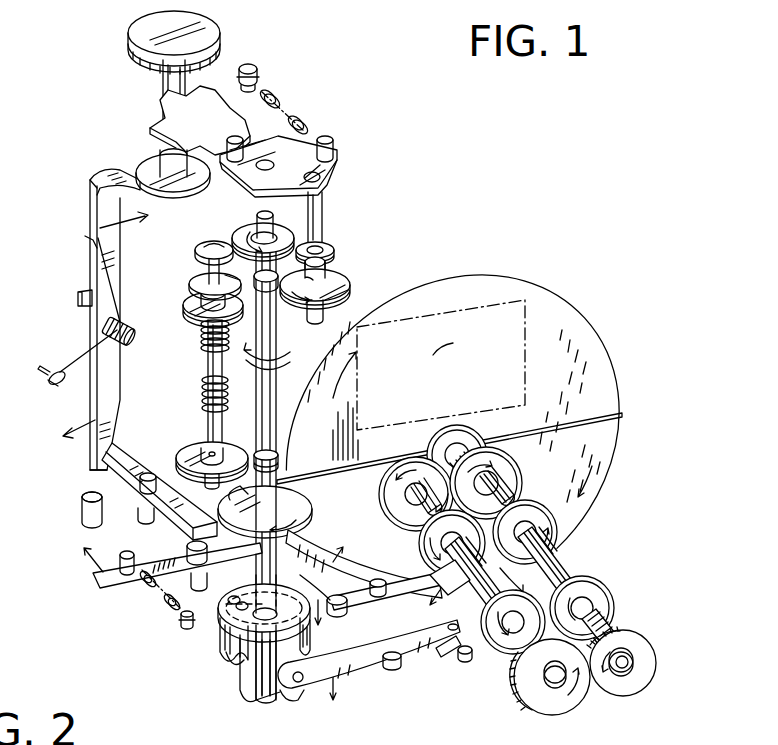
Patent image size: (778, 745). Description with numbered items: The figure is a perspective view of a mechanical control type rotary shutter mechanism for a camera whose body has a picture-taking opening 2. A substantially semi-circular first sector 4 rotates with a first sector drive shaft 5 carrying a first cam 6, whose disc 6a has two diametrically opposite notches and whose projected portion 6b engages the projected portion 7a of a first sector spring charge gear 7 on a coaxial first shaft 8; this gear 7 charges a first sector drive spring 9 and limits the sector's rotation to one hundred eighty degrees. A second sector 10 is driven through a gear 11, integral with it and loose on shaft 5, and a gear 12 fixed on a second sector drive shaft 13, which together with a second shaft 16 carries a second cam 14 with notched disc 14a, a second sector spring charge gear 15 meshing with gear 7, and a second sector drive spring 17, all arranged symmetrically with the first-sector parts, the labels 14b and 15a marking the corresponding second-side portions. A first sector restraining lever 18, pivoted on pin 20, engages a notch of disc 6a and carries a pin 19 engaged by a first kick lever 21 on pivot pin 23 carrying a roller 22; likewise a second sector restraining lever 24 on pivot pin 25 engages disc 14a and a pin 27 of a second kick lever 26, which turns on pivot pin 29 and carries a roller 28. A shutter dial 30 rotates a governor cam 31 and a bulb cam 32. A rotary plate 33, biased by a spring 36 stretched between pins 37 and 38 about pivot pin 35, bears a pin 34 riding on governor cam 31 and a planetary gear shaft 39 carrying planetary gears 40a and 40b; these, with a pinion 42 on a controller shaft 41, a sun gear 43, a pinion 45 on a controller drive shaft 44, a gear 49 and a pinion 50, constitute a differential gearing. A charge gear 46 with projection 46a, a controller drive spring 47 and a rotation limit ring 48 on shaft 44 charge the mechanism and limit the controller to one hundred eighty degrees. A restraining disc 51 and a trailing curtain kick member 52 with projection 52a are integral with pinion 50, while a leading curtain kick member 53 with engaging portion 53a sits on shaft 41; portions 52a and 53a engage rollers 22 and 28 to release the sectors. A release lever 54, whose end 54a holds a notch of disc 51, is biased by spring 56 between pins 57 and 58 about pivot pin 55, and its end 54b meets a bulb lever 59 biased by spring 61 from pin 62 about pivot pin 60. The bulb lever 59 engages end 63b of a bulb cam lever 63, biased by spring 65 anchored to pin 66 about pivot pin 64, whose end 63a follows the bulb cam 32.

The picture-taking opening 2 is at (515, 300).
The first sector 4 is at (600, 346).
The first sector drive shaft 5 is at (504, 492).
The first cam 6 is at (552, 564).
The disc 6a is at (558, 530).
The projected portion 6b is at (582, 588).
The first sector spring charge gear 7 is at (645, 680).
The projected portion 7a is at (600, 656).
The first shaft 8 is at (630, 662).
The first sector drive spring 9 is at (612, 608).
The second sector 10 is at (614, 446).
The gear 11 is at (500, 460).
The gear 12 is at (392, 468).
The second sector drive shaft 13 is at (384, 504).
The second cam 14 is at (502, 610).
The disc 14a is at (420, 540).
The roller on shaft 14 14b is at (510, 654).
The second sector spring charge gear 15 is at (586, 695).
The knurled rim 15a is at (604, 626).
The second shaft 16 is at (558, 684).
The second sector drive spring 17 is at (526, 662).
The first sector restraining lever 18 is at (465, 660).
The pin 19 is at (450, 636).
The pivot pin 20 is at (456, 644).
The first kick lever 21 is at (345, 680).
The roller 22 is at (270, 702).
The pivot pin 23 is at (392, 670).
The second sector restraining lever 24 is at (418, 588).
The pivot pin 25 is at (379, 594).
The second kick lever 26 is at (318, 598).
The pin 27 is at (340, 608).
The roller 28 is at (236, 655).
The pivot pin 29 is at (312, 662).
The shutter dial 30 is at (142, 40).
The governor cam 31 is at (186, 98).
The bulb cam 32 is at (165, 160).
The rotary plate 33 is at (336, 164).
The pin 34 is at (238, 134).
The pivot pin 35 is at (275, 166).
The spring 36 is at (277, 90).
The pin 37 is at (332, 136).
The pin 38 is at (255, 64).
The planetary gear shaft 39 is at (323, 212).
The planetary gear 40a is at (336, 248).
The planetary gear 40b is at (346, 276).
The controller shaft 41 is at (258, 224).
The pinion 42 is at (267, 312).
The sun gear 43 is at (242, 238).
The controller drive shaft 44 is at (207, 276).
The pinion 45 is at (200, 248).
The charge gear 46 is at (191, 318).
The upwardly projected portion 46a is at (198, 302).
The controller drive spring 47 is at (201, 345).
The rotation limit ring 48 is at (200, 291).
The controller driving gear 49 is at (202, 422).
The pinion 50 is at (283, 455).
The restraining disc 51 is at (305, 502).
The trailing curtain kick member 52 is at (220, 640).
The downwardly projected portion 52a is at (250, 698).
The leading curtain kick member 53 is at (243, 676).
The engaging portion 53a is at (294, 700).
The release lever 54 is at (98, 580).
The one end of release lever 54a is at (296, 546).
The one end of release lever 54b is at (185, 475).
The pivot pin 55 is at (189, 546).
The spring 56 is at (162, 612).
The pin 57 is at (127, 551).
The pin 58 is at (183, 626).
The bulb lever 59 is at (136, 490).
The pivot pin 60 is at (147, 473).
The spring 61 is at (82, 502).
The pin 62 is at (84, 516).
The bulb cam lever 63 is at (96, 210).
The one end of bulb cam lever 63a is at (134, 184).
The one end of bulb cam lever 63b is at (91, 458).
The pivot pin 64 is at (80, 296).
The spring 65 is at (84, 356).
The pin 66 is at (55, 386).